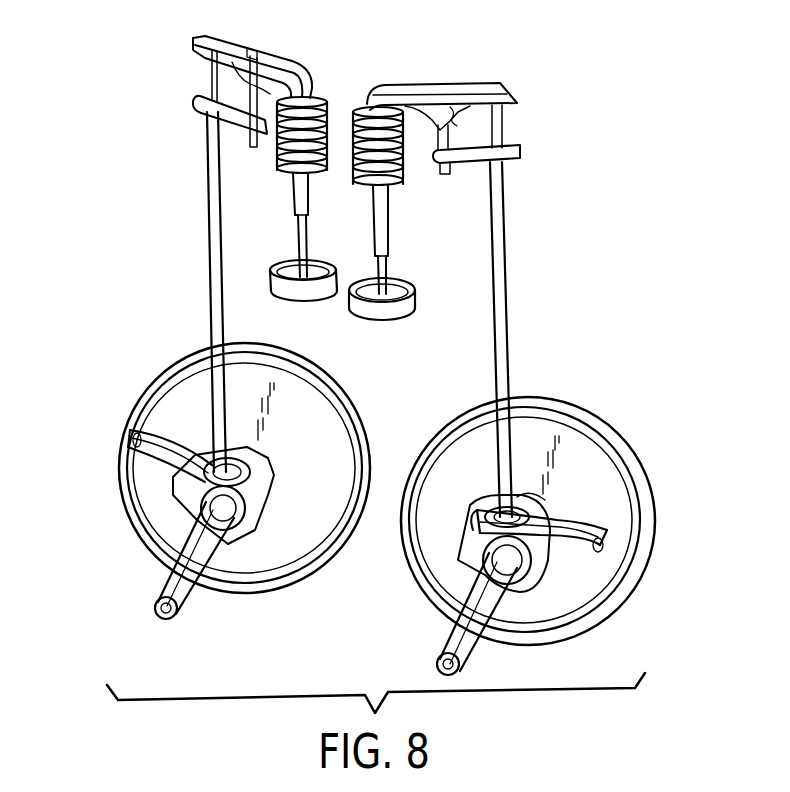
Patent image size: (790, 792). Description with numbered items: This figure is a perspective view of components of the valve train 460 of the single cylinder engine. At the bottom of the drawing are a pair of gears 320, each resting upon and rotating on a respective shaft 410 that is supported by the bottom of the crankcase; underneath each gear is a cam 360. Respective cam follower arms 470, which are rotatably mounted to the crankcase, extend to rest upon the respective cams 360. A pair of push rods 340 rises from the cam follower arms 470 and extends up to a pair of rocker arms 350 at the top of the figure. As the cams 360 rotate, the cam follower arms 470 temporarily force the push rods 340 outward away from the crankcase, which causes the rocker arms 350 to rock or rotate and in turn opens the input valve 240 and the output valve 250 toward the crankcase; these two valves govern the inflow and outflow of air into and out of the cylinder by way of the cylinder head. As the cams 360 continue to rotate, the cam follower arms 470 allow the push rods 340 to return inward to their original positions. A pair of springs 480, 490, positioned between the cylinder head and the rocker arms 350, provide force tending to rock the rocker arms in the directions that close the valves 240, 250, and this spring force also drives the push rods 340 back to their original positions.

The input valve 240 is at (410, 290).
The output valve 250 is at (318, 262).
The gears 320 is at (350, 437).
The push rods 340 is at (212, 222).
The rocker arms 350 is at (262, 60).
The cams 360 is at (265, 492).
The shafts 410 is at (165, 593).
The valve train 460 is at (108, 130).
The cam follower arms 470 is at (205, 462).
The spring 480 is at (362, 112).
The spring 490 is at (322, 96).